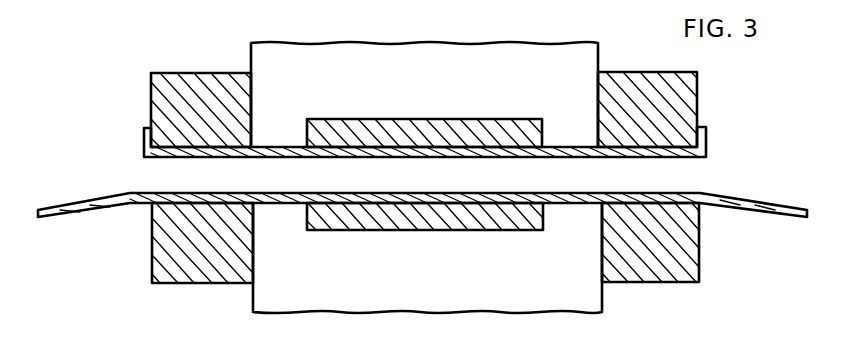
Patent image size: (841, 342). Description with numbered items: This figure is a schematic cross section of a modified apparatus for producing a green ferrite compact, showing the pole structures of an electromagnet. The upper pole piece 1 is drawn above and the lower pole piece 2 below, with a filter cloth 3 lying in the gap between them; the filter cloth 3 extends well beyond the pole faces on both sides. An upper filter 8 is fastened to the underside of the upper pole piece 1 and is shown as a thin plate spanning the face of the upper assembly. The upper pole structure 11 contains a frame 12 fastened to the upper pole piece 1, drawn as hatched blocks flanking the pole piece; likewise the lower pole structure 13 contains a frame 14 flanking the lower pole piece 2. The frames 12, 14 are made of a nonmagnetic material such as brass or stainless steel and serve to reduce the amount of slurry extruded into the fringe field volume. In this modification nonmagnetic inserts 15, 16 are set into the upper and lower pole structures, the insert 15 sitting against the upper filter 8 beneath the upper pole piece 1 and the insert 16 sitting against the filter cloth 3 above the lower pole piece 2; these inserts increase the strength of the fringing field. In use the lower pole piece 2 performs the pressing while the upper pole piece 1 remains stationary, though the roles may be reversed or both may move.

The upper pole piece 1 is at (262, 64).
The lower pole piece 2 is at (275, 300).
The filter cloth 3 is at (130, 194).
The upper filter 8 is at (705, 150).
The upper pole structure 11 is at (699, 98).
The frame 12 is at (655, 85).
The lower pole structure 13 is at (700, 267).
The frame 14 is at (650, 268).
The nonmagnetic insert 15 is at (437, 125).
The nonmagnetic insert 16 is at (435, 220).